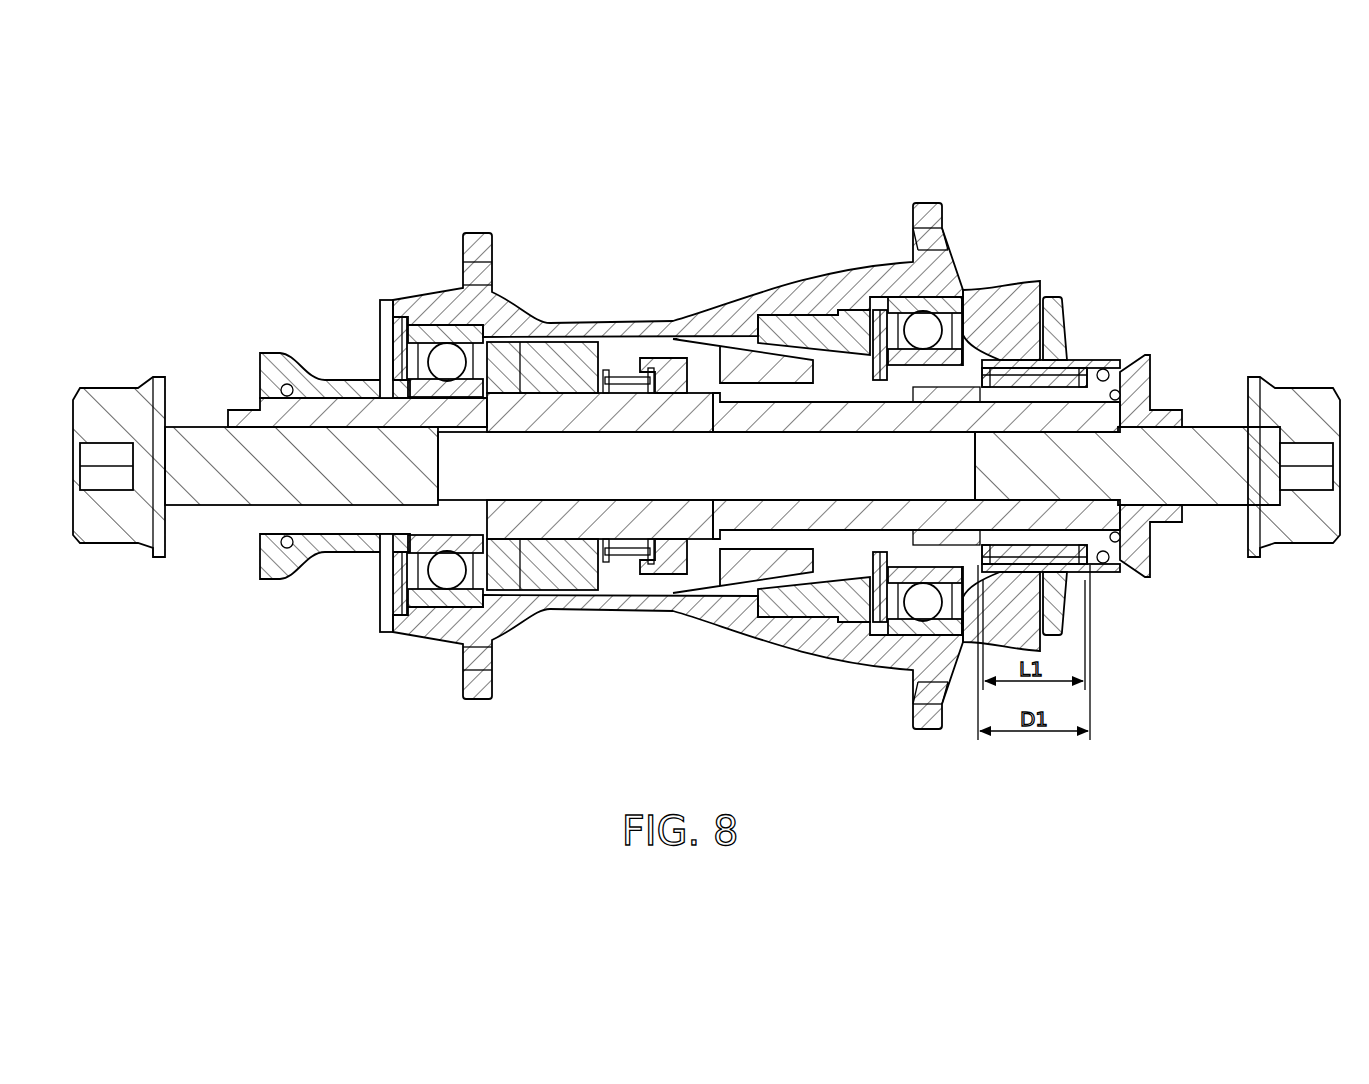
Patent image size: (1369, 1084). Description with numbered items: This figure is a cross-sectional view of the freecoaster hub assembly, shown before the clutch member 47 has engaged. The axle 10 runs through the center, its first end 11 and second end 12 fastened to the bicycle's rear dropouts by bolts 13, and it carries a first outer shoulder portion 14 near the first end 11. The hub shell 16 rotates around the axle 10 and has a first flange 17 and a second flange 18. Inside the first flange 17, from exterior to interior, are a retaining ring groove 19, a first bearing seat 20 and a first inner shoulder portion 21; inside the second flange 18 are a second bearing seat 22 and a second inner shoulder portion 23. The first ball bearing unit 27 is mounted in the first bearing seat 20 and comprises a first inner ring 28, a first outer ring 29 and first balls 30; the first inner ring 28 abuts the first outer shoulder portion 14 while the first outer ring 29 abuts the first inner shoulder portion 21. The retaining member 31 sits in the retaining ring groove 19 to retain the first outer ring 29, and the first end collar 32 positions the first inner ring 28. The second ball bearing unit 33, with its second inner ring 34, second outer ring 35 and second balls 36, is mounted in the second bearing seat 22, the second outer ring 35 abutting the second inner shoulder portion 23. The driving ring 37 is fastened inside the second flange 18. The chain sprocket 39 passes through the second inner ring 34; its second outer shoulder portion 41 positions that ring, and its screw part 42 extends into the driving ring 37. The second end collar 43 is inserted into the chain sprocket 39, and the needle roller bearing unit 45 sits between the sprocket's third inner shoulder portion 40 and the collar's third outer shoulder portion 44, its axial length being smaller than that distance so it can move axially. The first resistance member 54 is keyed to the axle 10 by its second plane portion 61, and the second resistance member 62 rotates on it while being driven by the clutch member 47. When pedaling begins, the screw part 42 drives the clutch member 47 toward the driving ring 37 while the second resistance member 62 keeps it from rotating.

The axle 10 is at (222, 540).
The first end 11 is at (347, 522).
The second end 12 is at (855, 522).
The bolts 13 is at (106, 538).
The first outer shoulder portion 14 is at (512, 398).
The hub shell 16 is at (688, 620).
The first flange 17 is at (477, 683).
The second flange 18 is at (927, 215).
The retaining ring groove 19 is at (398, 326).
The first bearing seat 20 is at (423, 322).
The first inner shoulder portion 21 is at (518, 330).
The second bearing seat 22 is at (905, 292).
The second inner shoulder portion 23 is at (878, 312).
The first ball bearing unit 27 is at (430, 612).
The first inner ring 28 is at (262, 410).
The first outer ring 29 is at (450, 330).
The first balls 30 is at (440, 362).
The retaining member 31 is at (398, 322).
The first end collar 32 is at (303, 552).
The second ball bearing unit 33 is at (906, 640).
The second inner ring 34 is at (990, 322).
The second outer ring 35 is at (932, 330).
The second balls 36 is at (942, 353).
The driving ring 37 is at (820, 332).
The chain sprocket 39 is at (1070, 300).
The third inner shoulder portion 40 is at (970, 557).
The second outer shoulder portion 41 is at (1010, 345).
The screw part 42 is at (787, 542).
The second end collar 43 is at (1134, 543).
The third outer shoulder portion 44 is at (1088, 552).
The needle roller bearing unit 45 is at (1052, 366).
The clutch member 47 is at (738, 598).
The first resistance member 54 is at (696, 362).
The second plane portion 61 is at (645, 378).
The second resistance member 62 is at (688, 583).